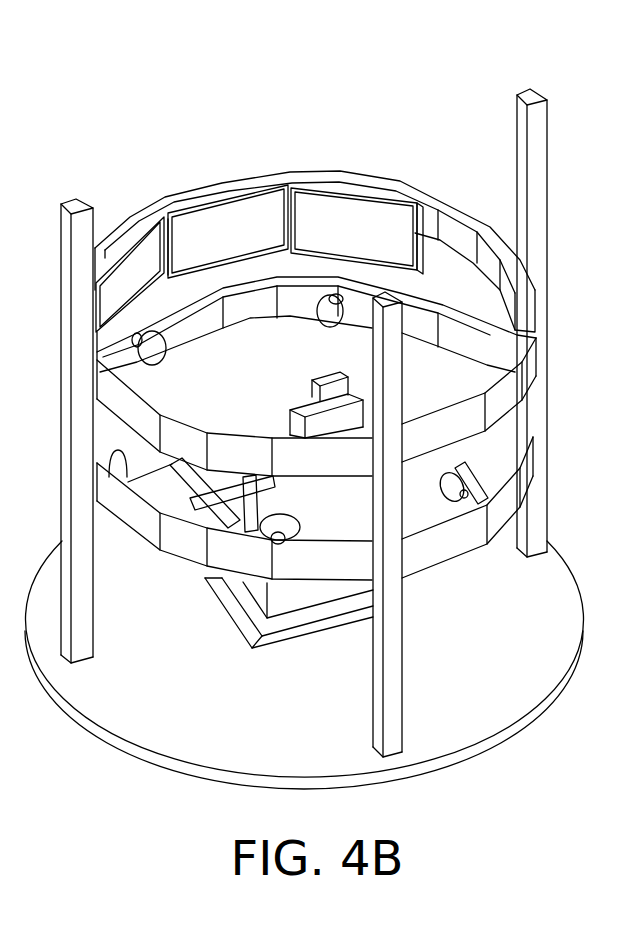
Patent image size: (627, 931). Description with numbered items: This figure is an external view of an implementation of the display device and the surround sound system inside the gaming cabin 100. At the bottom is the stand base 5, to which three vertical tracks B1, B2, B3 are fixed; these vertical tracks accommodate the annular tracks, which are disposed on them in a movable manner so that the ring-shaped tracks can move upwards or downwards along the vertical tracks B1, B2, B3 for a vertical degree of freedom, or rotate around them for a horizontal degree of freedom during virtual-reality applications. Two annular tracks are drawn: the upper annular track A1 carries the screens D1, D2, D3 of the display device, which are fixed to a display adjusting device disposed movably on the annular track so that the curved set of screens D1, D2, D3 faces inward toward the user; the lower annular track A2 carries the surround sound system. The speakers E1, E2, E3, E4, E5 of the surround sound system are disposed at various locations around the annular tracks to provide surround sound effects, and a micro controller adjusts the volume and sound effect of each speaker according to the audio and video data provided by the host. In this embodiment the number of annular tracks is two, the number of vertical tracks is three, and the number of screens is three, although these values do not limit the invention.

The gaming cabin 100 is at (237, 81).
The stand base 5 is at (505, 697).
The annular track A1 is at (520, 372).
The annular track A2 is at (521, 480).
The vertical track B1 is at (79, 206).
The vertical track B2 is at (392, 665).
The vertical track B3 is at (533, 97).
The screen D1 is at (142, 298).
The screen D2 is at (240, 253).
The screen D3 is at (363, 245).
The speaker E1 is at (328, 318).
The speaker E2 is at (154, 352).
The speaker E3 is at (115, 476).
The speaker E4 is at (287, 527).
The speaker E5 is at (447, 498).